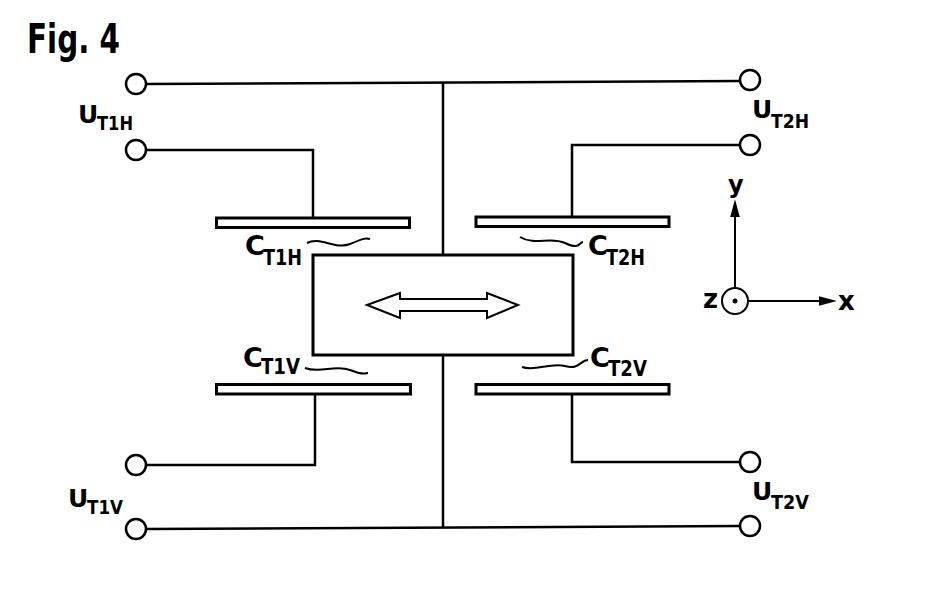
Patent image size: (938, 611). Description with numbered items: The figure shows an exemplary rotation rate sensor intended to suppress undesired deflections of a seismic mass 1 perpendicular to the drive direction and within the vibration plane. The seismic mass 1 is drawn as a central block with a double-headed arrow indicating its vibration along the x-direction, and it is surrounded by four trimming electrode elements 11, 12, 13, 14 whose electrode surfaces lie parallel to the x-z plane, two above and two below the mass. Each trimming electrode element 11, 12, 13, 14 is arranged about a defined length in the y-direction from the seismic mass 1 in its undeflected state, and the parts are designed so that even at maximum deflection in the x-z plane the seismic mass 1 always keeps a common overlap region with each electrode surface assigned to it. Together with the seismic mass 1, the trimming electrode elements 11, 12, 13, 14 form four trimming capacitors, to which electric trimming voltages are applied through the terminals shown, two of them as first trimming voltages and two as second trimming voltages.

The seismic mass 1 is at (574, 322).
The trimming electrode element 11 is at (367, 217).
The trimming electrode element 12 is at (522, 216).
The trimming electrode element 13 is at (369, 395).
The trimming electrode element 14 is at (525, 395).